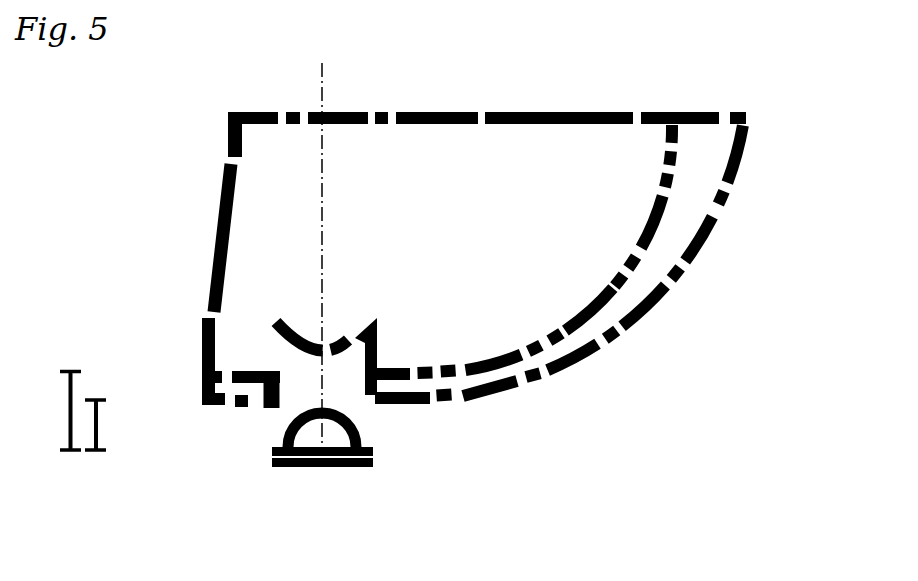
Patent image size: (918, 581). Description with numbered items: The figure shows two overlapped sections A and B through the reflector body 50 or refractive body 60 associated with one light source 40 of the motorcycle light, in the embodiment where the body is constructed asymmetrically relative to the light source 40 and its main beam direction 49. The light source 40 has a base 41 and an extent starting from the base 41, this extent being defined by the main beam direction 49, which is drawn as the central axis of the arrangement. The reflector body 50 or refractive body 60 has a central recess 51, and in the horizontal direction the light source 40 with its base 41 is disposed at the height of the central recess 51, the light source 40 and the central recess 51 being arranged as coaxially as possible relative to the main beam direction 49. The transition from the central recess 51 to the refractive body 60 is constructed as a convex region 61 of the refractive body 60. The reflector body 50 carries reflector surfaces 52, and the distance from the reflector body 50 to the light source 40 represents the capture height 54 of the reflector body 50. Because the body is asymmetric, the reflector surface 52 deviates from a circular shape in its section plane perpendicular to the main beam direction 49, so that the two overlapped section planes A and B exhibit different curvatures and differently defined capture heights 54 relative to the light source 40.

The light source 40 is at (338, 432).
The base 41 is at (272, 457).
The main beam direction 49 is at (320, 183).
The reflector body 50 is at (443, 176).
The central recess 51 is at (302, 370).
The reflector surfaces 52 is at (549, 236).
The capture height 54 is at (97, 412).
The refractive body 60 is at (243, 246).
The convex region 61 is at (313, 342).
The section A is at (503, 368).
The section B is at (572, 362).